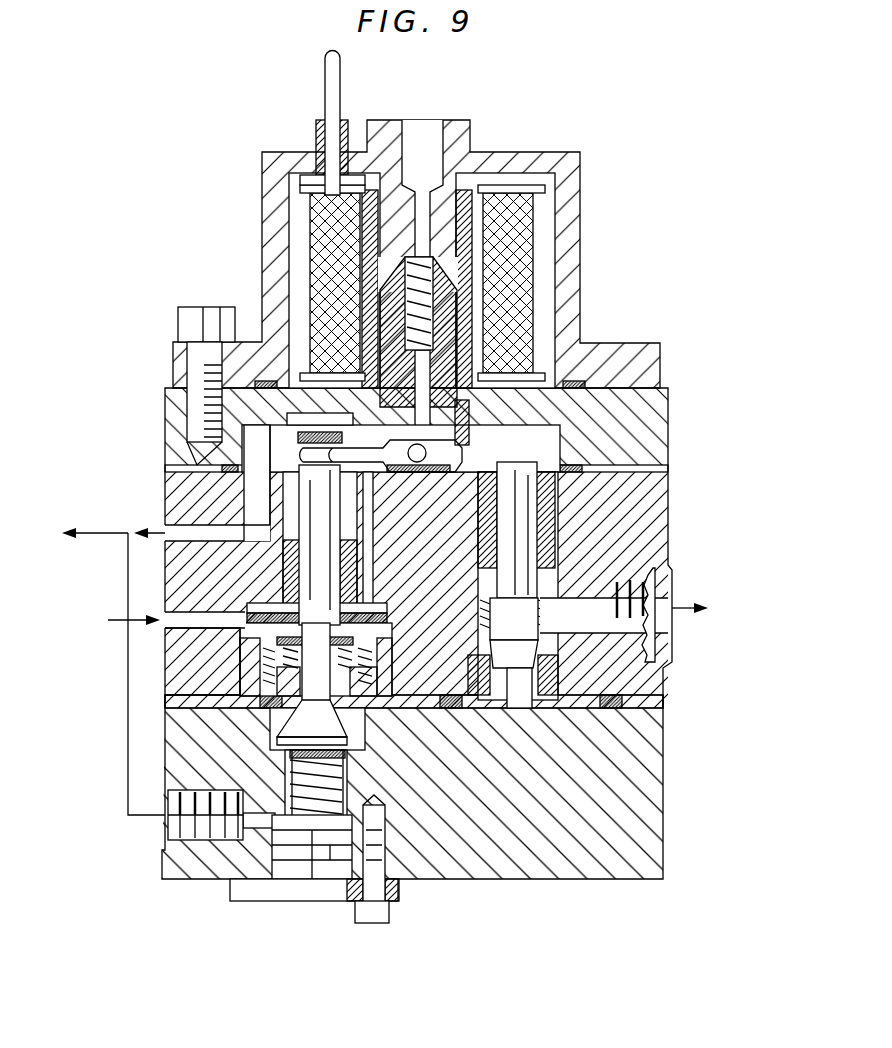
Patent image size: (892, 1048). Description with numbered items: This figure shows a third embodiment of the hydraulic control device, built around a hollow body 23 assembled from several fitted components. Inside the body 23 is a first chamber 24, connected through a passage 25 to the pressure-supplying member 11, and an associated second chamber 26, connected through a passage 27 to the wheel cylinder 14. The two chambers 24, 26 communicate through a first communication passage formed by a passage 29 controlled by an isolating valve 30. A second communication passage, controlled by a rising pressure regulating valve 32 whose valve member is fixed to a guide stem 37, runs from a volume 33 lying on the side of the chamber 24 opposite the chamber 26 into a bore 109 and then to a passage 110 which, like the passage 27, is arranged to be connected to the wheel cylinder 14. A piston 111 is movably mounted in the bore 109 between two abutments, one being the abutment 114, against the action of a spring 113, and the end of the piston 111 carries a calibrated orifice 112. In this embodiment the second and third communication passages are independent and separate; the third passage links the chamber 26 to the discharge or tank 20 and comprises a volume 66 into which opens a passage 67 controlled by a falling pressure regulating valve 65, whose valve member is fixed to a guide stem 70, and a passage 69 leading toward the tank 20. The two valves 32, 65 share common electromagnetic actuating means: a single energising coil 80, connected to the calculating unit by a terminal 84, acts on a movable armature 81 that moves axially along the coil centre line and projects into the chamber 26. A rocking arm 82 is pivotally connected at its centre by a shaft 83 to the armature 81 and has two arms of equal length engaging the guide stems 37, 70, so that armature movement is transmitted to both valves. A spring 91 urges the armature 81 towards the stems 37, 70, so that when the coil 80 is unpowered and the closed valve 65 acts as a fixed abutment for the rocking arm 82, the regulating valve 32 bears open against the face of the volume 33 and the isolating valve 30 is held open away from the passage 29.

The terminal 84 is at (323, 80).
The energising coil 80 is at (540, 242).
The spring 91 is at (406, 262).
The movable armature 81 is at (452, 282).
The shaft 83 is at (410, 448).
The rocking arm 82 is at (470, 440).
The second chamber 26 is at (253, 442).
The hollow body 23 is at (677, 441).
The passage 27 is at (203, 530).
The wheel cylinder 14 is at (113, 657).
The passage 29 is at (375, 506).
The guide stem 37 is at (330, 503).
The passage 25 is at (204, 626).
The member 11 is at (104, 620).
The first chamber 24 is at (238, 640).
The isolating valve 30 is at (390, 606).
The guide stem 70 is at (528, 503).
The falling pressure regulating valve 65 is at (497, 690).
The passage 67 is at (552, 688).
The volume 66 is at (532, 697).
The passage 69 is at (608, 604).
The tank 20 is at (739, 610).
The volume 33 is at (268, 722).
The rising pressure regulating valve 32 is at (282, 740).
The bore 109 is at (346, 786).
The piston 111 is at (350, 764).
The calibrated orifice 112 is at (310, 758).
The spring 113 is at (347, 808).
The passage 110 is at (310, 859).
The abutment 114 is at (272, 762).